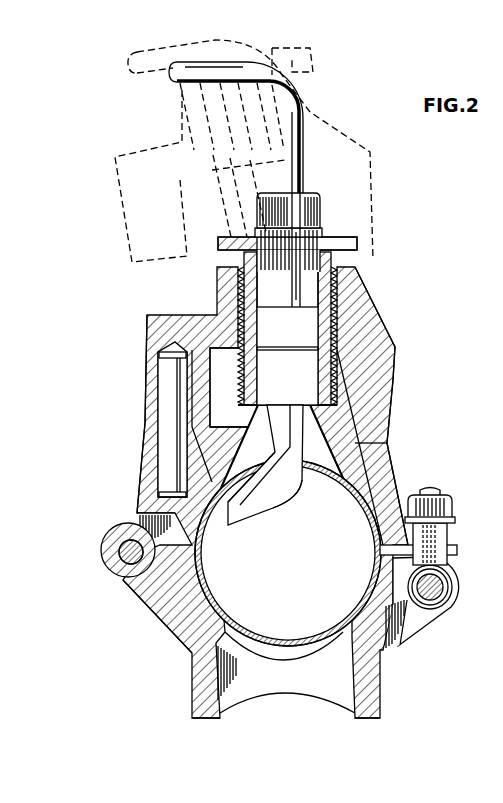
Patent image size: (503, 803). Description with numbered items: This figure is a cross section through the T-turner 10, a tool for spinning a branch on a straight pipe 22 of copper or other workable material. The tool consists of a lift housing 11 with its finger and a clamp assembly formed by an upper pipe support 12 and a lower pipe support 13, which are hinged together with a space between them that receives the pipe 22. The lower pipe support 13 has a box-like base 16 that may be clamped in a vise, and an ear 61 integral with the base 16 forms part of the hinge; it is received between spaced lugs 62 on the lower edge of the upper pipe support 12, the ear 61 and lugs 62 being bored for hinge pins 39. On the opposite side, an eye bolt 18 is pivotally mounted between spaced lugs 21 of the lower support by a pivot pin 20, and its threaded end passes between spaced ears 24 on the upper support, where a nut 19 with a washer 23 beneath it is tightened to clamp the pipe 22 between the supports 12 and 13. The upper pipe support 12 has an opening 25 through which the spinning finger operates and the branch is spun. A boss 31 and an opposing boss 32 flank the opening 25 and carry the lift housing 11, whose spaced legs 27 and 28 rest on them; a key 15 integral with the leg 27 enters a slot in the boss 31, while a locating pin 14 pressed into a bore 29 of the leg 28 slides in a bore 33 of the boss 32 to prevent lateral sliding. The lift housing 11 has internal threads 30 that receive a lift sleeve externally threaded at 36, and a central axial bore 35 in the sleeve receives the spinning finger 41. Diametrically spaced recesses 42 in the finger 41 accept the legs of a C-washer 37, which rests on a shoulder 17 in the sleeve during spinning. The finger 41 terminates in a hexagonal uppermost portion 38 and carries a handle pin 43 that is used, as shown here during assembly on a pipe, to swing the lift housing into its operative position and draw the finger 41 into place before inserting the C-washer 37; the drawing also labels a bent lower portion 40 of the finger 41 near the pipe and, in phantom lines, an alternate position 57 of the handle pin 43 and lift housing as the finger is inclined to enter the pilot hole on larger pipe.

The T-turner 10 is at (393, 338).
The lift housing 11 is at (396, 390).
The upper pipe support 12 is at (393, 483).
The lower pipe support 13 is at (148, 607).
The locating pin 14 is at (162, 410).
The key 15 is at (382, 440).
The base 16 is at (383, 697).
The shoulder 17 is at (358, 250).
The eye bolt 18 is at (433, 490).
The nut 19 is at (455, 507).
The pivot pin 20 is at (444, 585).
The lugs 21 is at (432, 624).
The pipe 22 is at (250, 634).
The washer 23 is at (454, 521).
The ears 24 is at (458, 547).
The opening 25 is at (240, 456).
The leg 27 is at (400, 356).
The leg 28 is at (153, 393).
The bore 29 is at (158, 367).
The internal threads 30 is at (357, 292).
The boss 31 is at (385, 457).
The boss 32 is at (139, 484).
The bore 33 is at (142, 456).
The central axial bore 35 is at (250, 396).
The external threads 36 is at (233, 392).
The C-washer 37 is at (317, 231).
The uppermost portion 38 is at (317, 205).
The hinge pins 39 is at (116, 578).
The bend of lever arm 40 is at (266, 503).
The spinning finger 41 is at (293, 287).
The recesses 42 is at (357, 242).
The handle pin 43 is at (293, 108).
The handle (phantom) 57 is at (212, 184).
The ear 61 is at (121, 568).
The lugs 62 is at (138, 517).